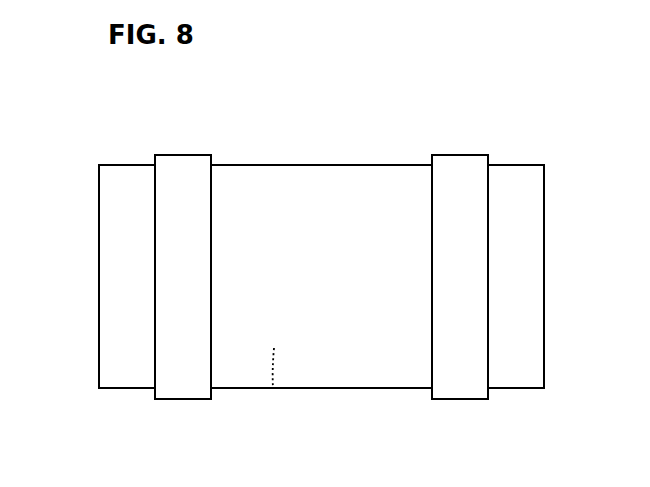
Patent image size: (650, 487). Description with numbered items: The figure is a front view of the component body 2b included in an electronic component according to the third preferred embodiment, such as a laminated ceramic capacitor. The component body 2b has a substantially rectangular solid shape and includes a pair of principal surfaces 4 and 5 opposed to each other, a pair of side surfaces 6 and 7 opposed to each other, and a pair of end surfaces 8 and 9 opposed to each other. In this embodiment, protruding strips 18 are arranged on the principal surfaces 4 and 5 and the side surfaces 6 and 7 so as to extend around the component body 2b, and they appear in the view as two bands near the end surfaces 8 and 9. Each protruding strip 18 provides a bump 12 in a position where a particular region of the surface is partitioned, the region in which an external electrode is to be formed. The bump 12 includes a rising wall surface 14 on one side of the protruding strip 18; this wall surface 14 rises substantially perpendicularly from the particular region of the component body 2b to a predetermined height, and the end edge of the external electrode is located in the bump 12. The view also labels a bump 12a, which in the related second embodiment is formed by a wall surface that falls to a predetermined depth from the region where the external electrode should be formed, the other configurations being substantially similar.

The component body 2b is at (64, 94).
The principal surface 4 is at (336, 165).
The principal surface 5 is at (343, 388).
The side surface 6 is at (269, 195).
The side surface 7 is at (273, 388).
The end surface 8 is at (99, 303).
The end surface 9 is at (544, 286).
The bump 12 is at (492, 158).
The bump 12a is at (153, 159).
The wall surface 14 is at (155, 218).
The protruding strip 18 is at (182, 399).